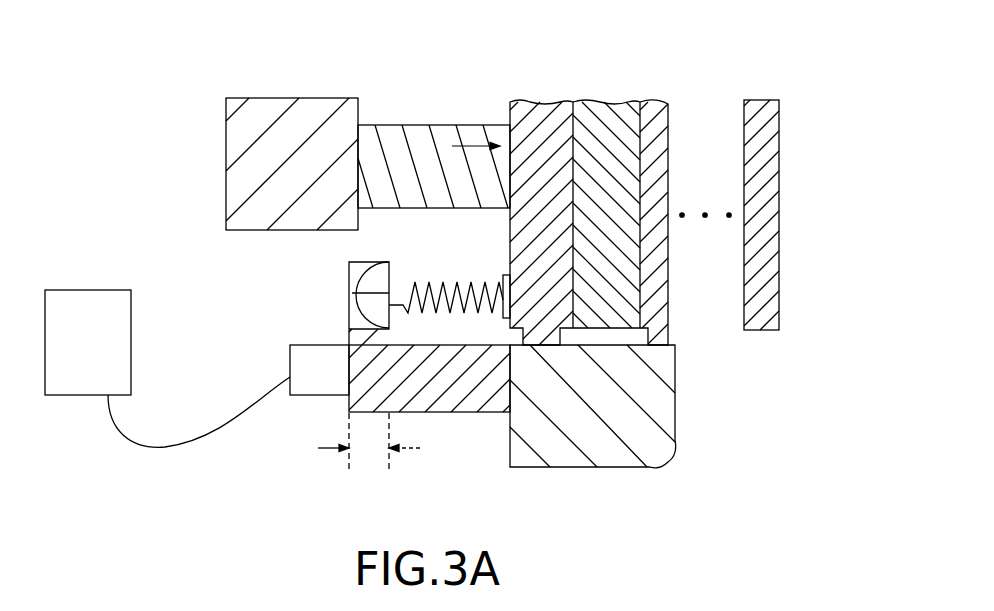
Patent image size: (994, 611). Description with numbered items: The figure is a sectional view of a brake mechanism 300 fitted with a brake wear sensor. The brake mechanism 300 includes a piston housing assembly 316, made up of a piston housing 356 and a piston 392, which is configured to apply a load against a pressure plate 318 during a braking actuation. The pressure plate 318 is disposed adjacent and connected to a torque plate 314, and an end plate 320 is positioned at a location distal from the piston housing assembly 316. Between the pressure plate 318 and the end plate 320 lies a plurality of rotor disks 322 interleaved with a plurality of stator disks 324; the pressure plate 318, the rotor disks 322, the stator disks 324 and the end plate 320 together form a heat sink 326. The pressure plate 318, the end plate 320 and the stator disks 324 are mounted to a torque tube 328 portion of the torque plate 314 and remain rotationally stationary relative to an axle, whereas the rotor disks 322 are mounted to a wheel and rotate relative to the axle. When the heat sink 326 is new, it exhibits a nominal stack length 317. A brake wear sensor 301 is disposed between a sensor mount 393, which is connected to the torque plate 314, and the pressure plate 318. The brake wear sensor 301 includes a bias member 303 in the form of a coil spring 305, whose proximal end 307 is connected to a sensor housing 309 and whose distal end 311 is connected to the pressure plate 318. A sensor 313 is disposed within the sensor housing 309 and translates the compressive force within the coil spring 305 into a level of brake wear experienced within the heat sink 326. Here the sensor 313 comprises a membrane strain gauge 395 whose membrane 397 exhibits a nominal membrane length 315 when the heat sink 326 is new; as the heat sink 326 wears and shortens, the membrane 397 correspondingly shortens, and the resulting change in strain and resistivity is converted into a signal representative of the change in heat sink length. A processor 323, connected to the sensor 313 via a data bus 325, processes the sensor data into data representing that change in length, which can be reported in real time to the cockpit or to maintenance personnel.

The brake mechanism 300 is at (145, 103).
The piston housing assembly 316 is at (325, 82).
The piston housing 356 is at (240, 168).
The piston 392 is at (418, 140).
The pressure plate 318 is at (545, 103).
The rotor disks 322 is at (600, 103).
The stator disks 324 is at (655, 103).
The heat sink 326 is at (678, 127).
The end plate 320 is at (757, 170).
The nominal stack length 317 is at (791, 147).
The torque tube 328 is at (665, 425).
The torque plate 314 is at (697, 390).
The sensor mount 393 is at (435, 412).
The membrane 397 is at (350, 318).
The bias member 303 is at (405, 292).
The proximal end 307 is at (365, 303).
The sensor housing 309 is at (355, 290).
The membrane strain gauge 395 is at (355, 275).
The sensor 313 is at (362, 320).
The nominal membrane length 315 is at (318, 448).
The brake wear sensor 301 is at (437, 266).
The coil spring 305 is at (476, 280).
The distal end 311 is at (503, 308).
The processor 323 is at (80, 308).
The data bus 325 is at (127, 440).